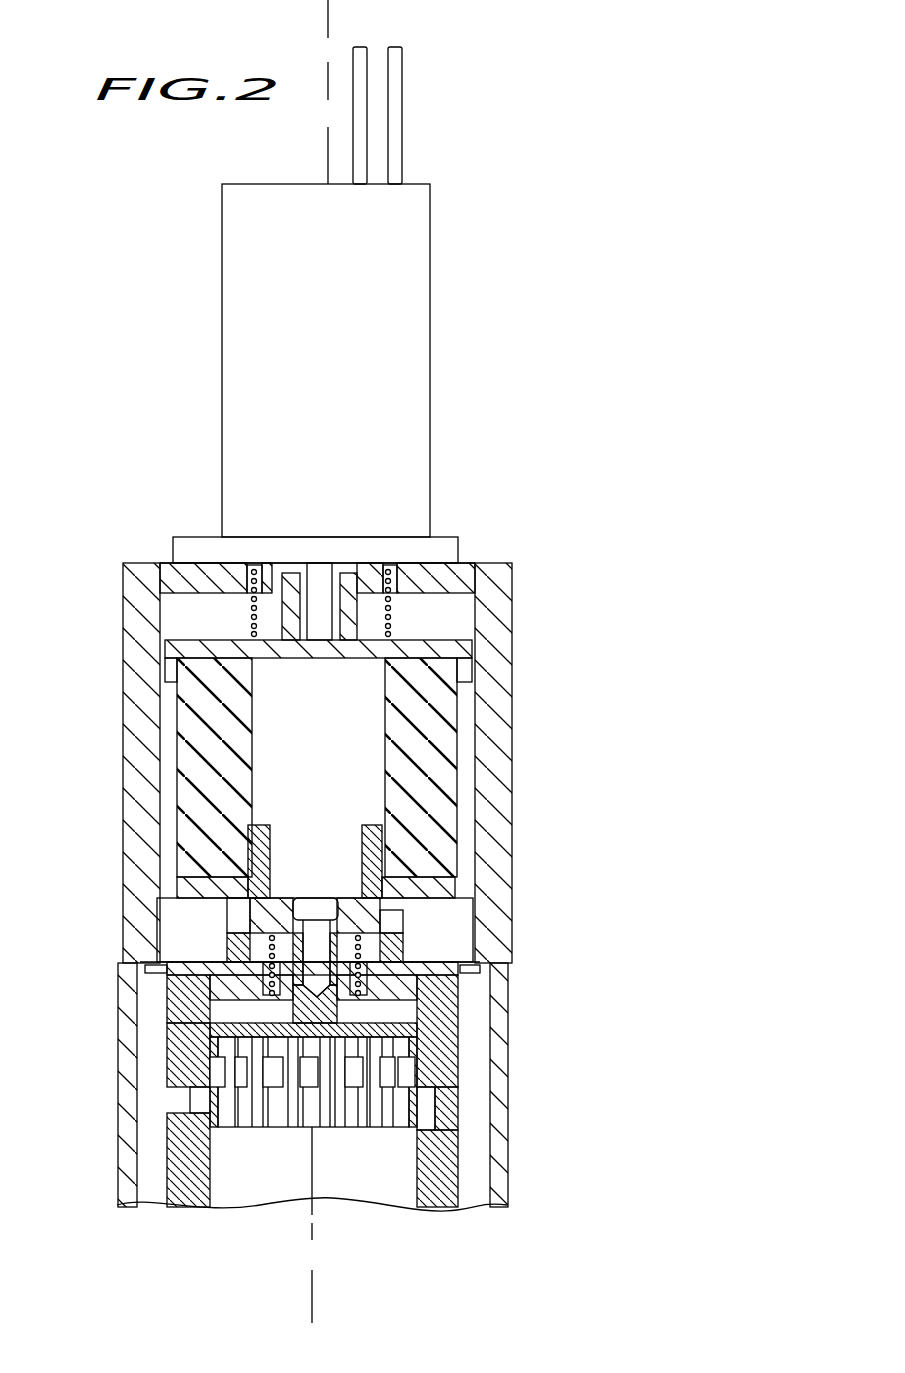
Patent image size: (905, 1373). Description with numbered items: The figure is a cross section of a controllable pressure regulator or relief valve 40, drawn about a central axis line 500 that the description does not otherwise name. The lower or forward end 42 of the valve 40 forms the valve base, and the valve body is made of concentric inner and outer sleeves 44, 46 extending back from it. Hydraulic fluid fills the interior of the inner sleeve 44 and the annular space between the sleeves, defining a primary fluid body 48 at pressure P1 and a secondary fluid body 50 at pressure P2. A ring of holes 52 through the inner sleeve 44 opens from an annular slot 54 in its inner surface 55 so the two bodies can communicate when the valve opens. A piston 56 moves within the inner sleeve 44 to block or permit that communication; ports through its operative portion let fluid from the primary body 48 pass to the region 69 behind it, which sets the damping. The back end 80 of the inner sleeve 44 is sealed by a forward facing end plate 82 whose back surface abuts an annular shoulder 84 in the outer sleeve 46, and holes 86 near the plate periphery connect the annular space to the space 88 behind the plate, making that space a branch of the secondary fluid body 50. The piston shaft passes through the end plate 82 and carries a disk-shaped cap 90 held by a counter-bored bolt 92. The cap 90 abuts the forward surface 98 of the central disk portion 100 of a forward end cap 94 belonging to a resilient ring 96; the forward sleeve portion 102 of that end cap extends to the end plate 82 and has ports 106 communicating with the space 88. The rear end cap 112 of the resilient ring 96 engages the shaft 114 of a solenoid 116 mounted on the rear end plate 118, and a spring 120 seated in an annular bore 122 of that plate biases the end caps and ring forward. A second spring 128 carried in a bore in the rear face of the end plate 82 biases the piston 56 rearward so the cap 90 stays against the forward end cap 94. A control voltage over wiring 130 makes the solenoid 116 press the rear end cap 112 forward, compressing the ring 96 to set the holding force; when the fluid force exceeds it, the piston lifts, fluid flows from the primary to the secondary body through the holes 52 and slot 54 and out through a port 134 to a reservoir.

The central axis 500 is at (330, 22).
The wiring 130 is at (360, 137).
The solenoid 116 is at (365, 365).
The rear end plate 118 is at (492, 583).
The outer sleeve 46 is at (135, 692).
The valve 40 is at (100, 608).
The annular bore 122 is at (248, 577).
The spring 120 is at (392, 606).
The shaft 114 is at (318, 580).
The rear end cap 112 is at (445, 650).
The resilient ring 96 is at (428, 752).
The central disk portion 100 is at (445, 885).
The space 88 is at (158, 930).
The disk-shaped cap 90 is at (263, 918).
The counter-bored bolt 92 is at (325, 910).
The forward end cap 94 is at (186, 903).
The forward surface 98 is at (263, 935).
The ports 106 is at (427, 922).
The forward sleeve portion 102 is at (385, 977).
The annular shoulder 84 is at (143, 968).
The holes 86 is at (135, 1000).
The region 69 is at (228, 1012).
The piston 56 is at (255, 1032).
The inner sleeve 44 is at (185, 1062).
The holes 52 is at (145, 1108).
The annular slot 54 is at (175, 1125).
The back end 80 is at (483, 1030).
The end plate 82 is at (385, 1030).
The second spring 128 is at (413, 1028).
The port 134 is at (530, 1088).
The pressure in primary body P1 is at (354, 1162).
The pressure in secondary body P2 is at (470, 1150).
The forward end 42 is at (505, 1238).
The secondary fluid body 50 is at (146, 1202).
The inner surface 55 is at (207, 1193).
The primary fluid body 48 is at (283, 1195).